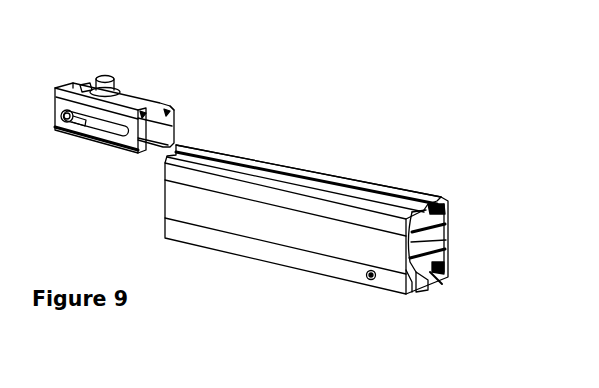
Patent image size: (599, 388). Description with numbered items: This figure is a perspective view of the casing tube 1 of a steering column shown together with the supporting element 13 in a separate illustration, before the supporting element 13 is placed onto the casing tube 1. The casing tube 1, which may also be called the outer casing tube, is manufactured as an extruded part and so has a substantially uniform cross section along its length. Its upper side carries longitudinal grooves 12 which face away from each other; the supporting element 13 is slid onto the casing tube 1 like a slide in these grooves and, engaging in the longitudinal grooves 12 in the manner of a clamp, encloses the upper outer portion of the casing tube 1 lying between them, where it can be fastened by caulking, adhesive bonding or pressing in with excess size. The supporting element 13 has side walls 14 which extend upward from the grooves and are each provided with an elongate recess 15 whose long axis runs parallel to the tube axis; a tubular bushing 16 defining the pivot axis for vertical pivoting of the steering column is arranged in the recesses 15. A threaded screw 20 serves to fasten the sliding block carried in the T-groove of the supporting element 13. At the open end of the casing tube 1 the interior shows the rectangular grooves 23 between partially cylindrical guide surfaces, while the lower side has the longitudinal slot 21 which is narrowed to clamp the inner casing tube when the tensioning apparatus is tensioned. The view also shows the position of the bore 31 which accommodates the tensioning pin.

The casing tube 1 is at (292, 256).
The longitudinal grooves 12 is at (440, 211).
The supporting element 13 is at (160, 73).
The side walls 14 is at (170, 119).
The elongate recess 15 is at (110, 130).
The tubular bushing 16 is at (80, 135).
The threaded screw 20 is at (112, 80).
The longitudinal slot 21 is at (452, 276).
The rectangular grooves 23 is at (430, 233).
The bore 31 is at (368, 281).